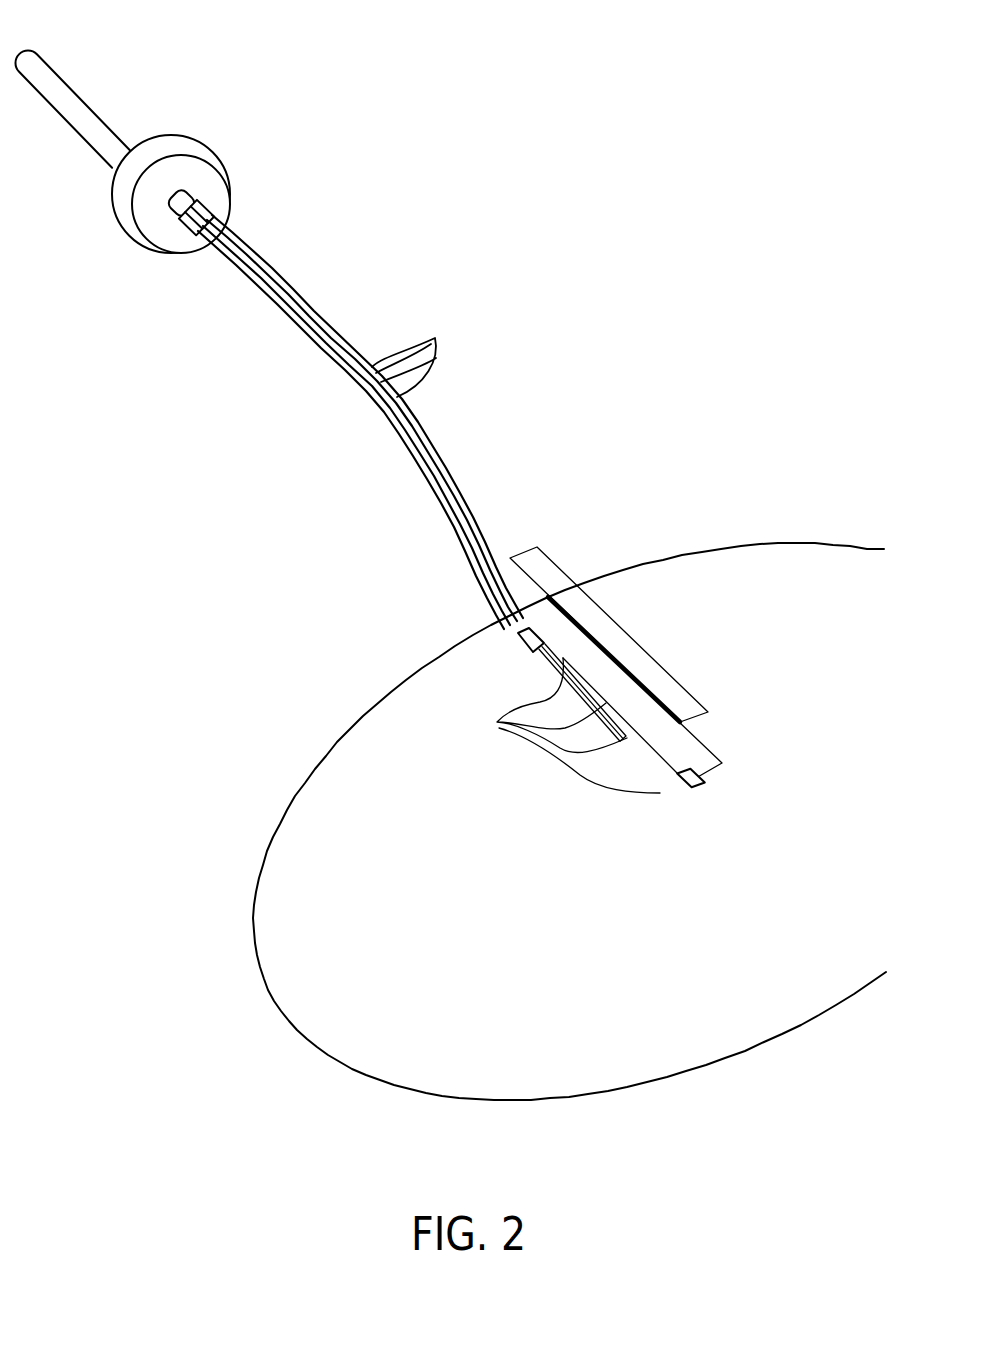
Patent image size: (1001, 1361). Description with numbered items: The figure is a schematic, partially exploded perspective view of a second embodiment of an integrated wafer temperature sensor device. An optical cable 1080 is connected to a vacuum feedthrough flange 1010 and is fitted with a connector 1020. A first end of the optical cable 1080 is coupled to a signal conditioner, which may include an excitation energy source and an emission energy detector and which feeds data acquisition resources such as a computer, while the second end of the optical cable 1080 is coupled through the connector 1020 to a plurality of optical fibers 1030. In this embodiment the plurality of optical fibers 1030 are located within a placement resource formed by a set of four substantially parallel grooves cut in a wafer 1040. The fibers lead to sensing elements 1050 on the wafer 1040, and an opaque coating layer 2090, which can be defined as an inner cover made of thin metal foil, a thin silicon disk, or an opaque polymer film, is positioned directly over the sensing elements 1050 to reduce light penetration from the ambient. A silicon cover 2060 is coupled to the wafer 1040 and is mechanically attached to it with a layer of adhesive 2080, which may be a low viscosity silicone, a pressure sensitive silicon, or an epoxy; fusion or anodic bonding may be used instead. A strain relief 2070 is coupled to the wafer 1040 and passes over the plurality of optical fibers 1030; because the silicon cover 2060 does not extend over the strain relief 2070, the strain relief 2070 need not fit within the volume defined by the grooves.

The optical cable 1080 is at (100, 107).
The vacuum feedthrough flange 1010 is at (152, 232).
The connector 1020 is at (216, 216).
The plurality of optical fibers 1030 is at (419, 352).
The wafer 1040 is at (330, 843).
The silicon cover 2060 is at (547, 572).
The strain relief 2070 is at (517, 642).
The layer of adhesive 2080 is at (708, 755).
The opaque coating layer 2090 is at (692, 788).
The sensing elements 1050 is at (550, 725).